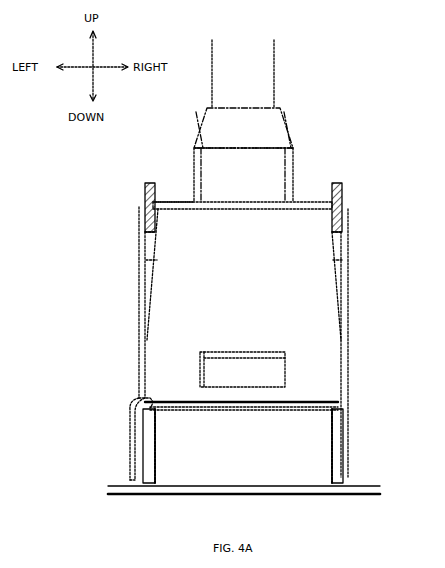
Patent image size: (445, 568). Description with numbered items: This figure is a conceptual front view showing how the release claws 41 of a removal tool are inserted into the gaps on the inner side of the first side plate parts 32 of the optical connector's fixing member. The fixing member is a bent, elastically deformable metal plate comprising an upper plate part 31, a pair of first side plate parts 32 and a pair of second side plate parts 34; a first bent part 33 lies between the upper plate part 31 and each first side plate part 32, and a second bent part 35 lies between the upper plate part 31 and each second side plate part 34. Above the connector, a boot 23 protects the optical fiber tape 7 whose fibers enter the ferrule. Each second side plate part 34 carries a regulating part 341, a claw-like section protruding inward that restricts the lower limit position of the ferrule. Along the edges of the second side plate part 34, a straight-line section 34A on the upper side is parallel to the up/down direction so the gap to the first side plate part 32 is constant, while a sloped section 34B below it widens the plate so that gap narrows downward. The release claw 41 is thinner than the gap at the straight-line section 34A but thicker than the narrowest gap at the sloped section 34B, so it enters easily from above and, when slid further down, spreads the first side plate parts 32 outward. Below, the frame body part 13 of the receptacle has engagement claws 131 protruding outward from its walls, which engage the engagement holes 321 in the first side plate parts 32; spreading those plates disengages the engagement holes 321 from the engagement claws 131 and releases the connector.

The optical fiber tape 7 is at (269, 80).
The boot 23 is at (283, 132).
The second bent part 35 is at (279, 190).
The upper plate part 31 is at (173, 200).
The first bent part 33 is at (344, 207).
The release claw 41 is at (144, 196).
The second side plate part 34 is at (300, 312).
The straight-line section 34A is at (144, 240).
The sloped section 34B is at (146, 262).
The first side plate part 32 is at (138, 288).
The engagement hole 321 is at (130, 462).
The regulating part 341 is at (286, 370).
The frame body part 13 is at (315, 443).
The engagement claw 131 is at (130, 436).